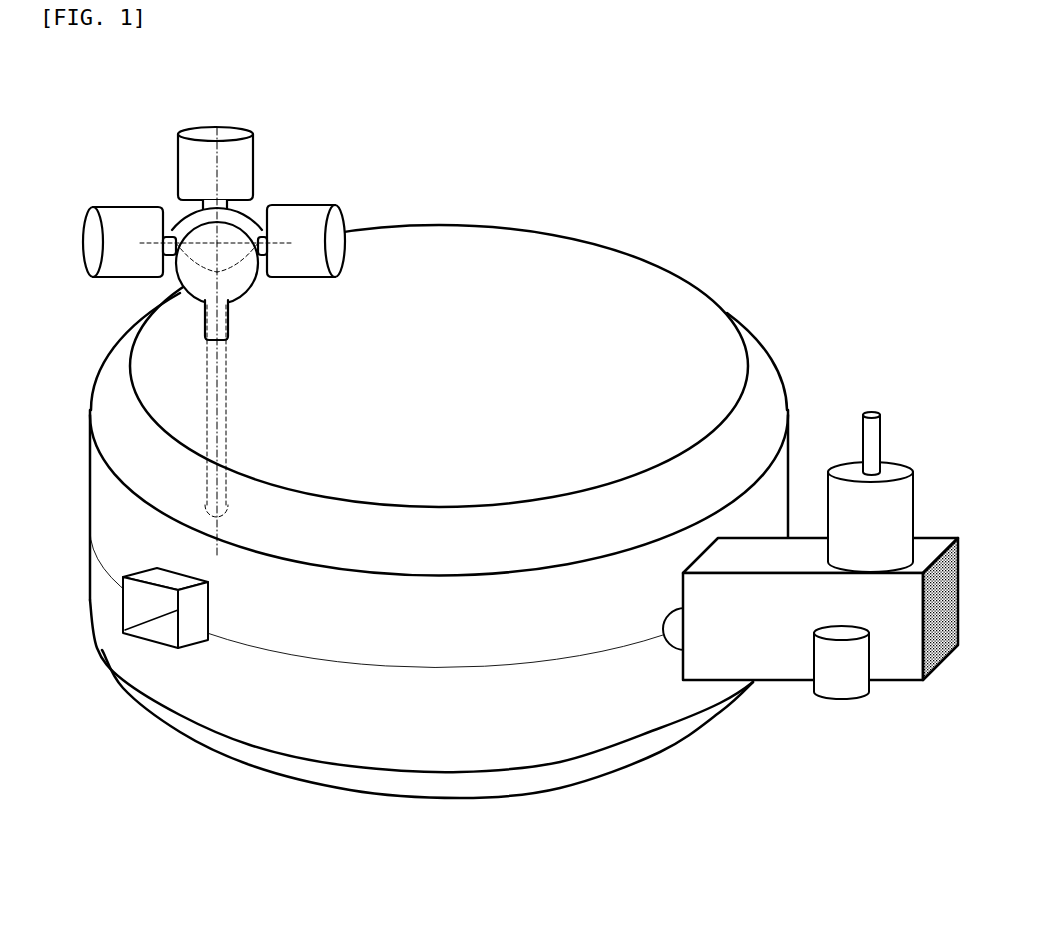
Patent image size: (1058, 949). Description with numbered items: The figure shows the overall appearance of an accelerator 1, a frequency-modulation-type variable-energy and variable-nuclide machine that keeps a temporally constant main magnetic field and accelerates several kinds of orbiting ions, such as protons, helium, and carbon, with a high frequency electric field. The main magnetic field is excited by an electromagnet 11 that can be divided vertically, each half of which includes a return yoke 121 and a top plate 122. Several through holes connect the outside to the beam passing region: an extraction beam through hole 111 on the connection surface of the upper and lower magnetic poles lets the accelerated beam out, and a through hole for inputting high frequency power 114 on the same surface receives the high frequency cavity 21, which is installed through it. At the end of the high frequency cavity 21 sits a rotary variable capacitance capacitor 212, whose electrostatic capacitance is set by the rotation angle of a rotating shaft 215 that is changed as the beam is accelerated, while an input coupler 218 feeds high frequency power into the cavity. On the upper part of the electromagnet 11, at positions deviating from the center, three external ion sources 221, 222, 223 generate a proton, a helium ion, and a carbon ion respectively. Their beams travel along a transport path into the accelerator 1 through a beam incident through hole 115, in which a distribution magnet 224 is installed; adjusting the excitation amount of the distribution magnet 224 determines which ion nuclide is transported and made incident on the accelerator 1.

The accelerator 1 is at (720, 150).
The electromagnet 11 is at (500, 250).
The extraction beam through hole 111 is at (145, 632).
The through hole for inputting high frequency power 114 is at (680, 648).
The beam incident through hole 115 is at (203, 373).
The return yoke 121 is at (348, 732).
The top plate 122 is at (500, 783).
The high frequency cavity 21 is at (768, 658).
The rotary variable capacitance capacitor 212 is at (900, 493).
The rotating shaft 215 is at (869, 412).
The input coupler 218 is at (843, 697).
The ion source 221 is at (317, 217).
The ion source 222 is at (225, 140).
The ion source 223 is at (125, 215).
The distribution magnet 224 is at (187, 228).